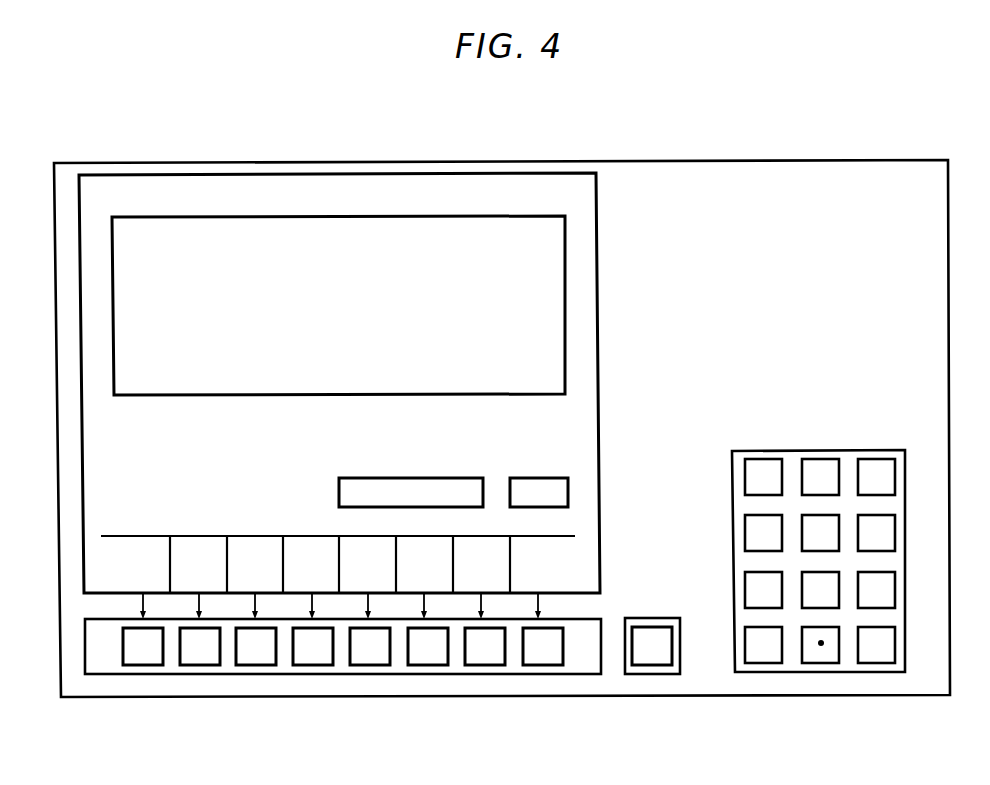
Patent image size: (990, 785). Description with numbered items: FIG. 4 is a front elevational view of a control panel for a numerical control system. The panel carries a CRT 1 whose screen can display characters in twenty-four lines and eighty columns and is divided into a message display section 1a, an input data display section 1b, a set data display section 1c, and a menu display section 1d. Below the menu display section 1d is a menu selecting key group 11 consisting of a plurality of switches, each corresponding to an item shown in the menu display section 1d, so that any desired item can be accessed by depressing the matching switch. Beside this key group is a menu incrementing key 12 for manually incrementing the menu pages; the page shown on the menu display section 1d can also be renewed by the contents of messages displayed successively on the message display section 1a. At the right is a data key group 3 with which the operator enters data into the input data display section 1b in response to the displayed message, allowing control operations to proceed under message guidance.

The CRT 1 is at (382, 174).
The message display section 1a is at (424, 477).
The input data display section 1b is at (549, 477).
The set data display section 1c is at (256, 396).
The menu display section 1d is at (256, 534).
The data key group 3 is at (832, 674).
The menu selecting key group 11 is at (345, 676).
The menu incrementing key 12 is at (653, 676).